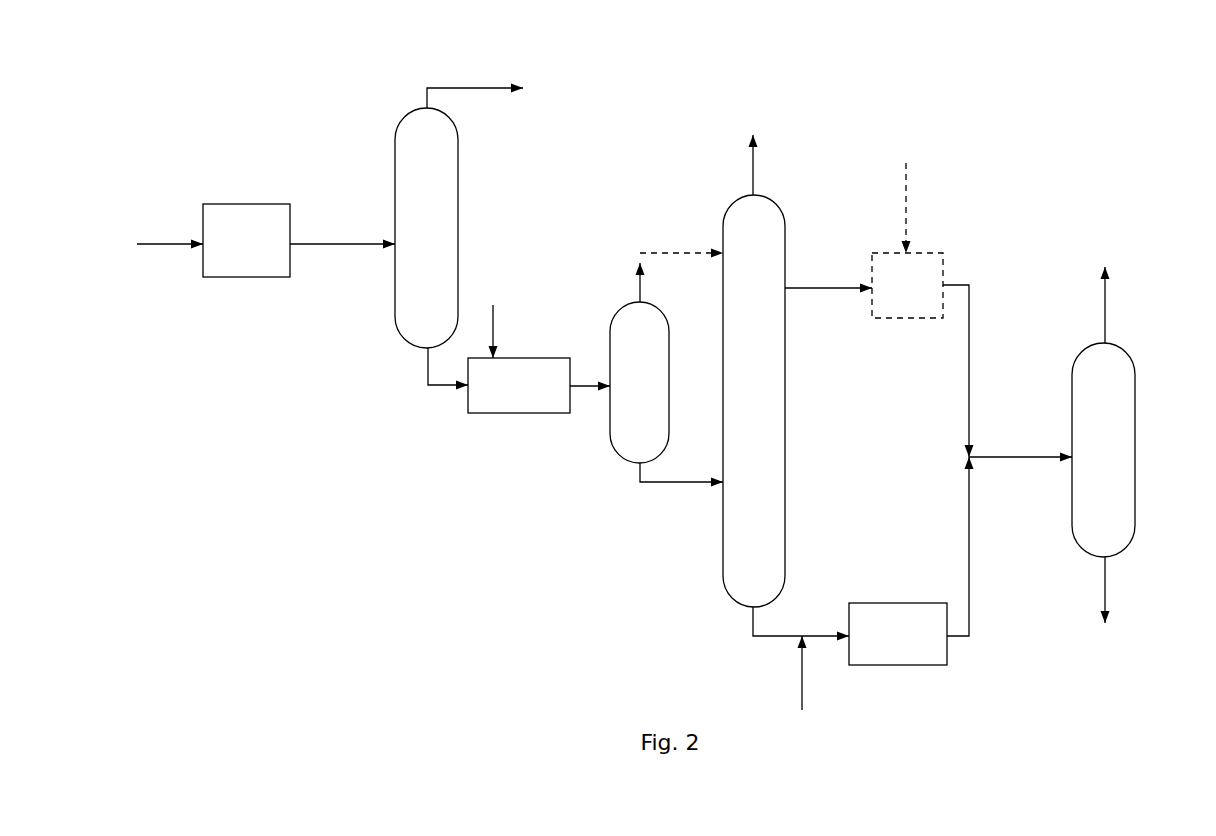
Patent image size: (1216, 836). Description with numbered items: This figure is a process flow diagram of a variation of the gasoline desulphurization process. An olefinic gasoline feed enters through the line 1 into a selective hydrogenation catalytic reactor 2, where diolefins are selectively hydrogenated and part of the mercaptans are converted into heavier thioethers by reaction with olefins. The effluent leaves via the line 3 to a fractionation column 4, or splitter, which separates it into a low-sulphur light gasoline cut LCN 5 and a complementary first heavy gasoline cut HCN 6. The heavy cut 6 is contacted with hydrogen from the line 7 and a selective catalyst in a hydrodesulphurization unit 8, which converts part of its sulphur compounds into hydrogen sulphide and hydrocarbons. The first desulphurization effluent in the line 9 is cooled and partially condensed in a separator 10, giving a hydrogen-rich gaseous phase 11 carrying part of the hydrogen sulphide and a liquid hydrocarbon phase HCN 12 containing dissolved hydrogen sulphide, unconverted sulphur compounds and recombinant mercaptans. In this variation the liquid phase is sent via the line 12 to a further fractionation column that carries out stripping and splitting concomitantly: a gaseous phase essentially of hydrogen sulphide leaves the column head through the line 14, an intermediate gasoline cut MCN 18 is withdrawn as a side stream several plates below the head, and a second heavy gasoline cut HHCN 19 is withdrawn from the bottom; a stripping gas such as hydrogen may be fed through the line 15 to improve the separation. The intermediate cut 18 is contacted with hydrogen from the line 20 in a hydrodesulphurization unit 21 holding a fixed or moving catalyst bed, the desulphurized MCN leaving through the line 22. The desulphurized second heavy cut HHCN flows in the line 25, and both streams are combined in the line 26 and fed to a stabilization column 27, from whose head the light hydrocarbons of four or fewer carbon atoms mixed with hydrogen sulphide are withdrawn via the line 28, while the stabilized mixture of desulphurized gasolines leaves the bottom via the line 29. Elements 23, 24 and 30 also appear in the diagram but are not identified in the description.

The line 1 is at (165, 244).
The selective hydrogenation catalytic reactor 2 is at (254, 204).
The line 3 is at (337, 244).
The fractionation column 4 is at (458, 170).
The light gasoline cut LCN 5 is at (468, 88).
The first heavy gasoline cut HCN 6 is at (443, 387).
The line 7 is at (493, 325).
The hydrodesulphurization unit 8 is at (515, 413).
The line 9 is at (590, 386).
The separator 10 is at (610, 330).
The gaseous phase 11 is at (640, 290).
The liquid hydrocarbon phase HCN 12 is at (668, 482).
The line 14 is at (753, 165).
The line 15 is at (685, 253).
The intermediate gasoline cut MCN 18 is at (822, 288).
The second heavy gasoline cut HHCN 19 is at (760, 636).
The line 20 is at (906, 195).
The hydrodesulphurization unit 21 is at (918, 318).
The line 22 is at (969, 362).
The additional feed stream 23 is at (802, 690).
The third reactor 24 is at (900, 603).
The line 25 is at (969, 573).
The line 26 is at (1020, 457).
The stabilization column 27 is at (1135, 418).
The line 28 is at (1105, 315).
The line 29 is at (1105, 585).
The distillation column 30 is at (785, 410).